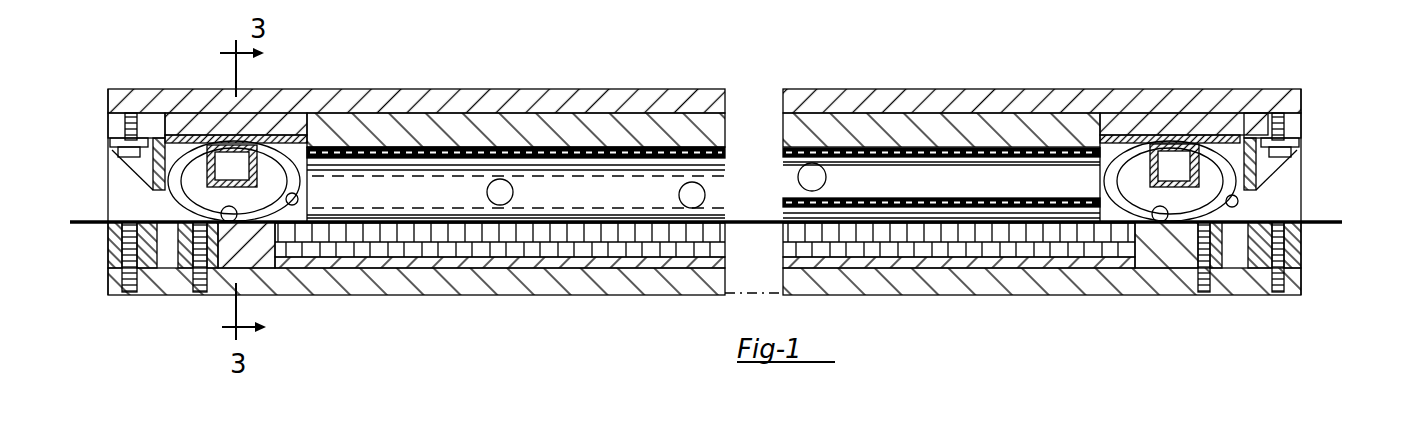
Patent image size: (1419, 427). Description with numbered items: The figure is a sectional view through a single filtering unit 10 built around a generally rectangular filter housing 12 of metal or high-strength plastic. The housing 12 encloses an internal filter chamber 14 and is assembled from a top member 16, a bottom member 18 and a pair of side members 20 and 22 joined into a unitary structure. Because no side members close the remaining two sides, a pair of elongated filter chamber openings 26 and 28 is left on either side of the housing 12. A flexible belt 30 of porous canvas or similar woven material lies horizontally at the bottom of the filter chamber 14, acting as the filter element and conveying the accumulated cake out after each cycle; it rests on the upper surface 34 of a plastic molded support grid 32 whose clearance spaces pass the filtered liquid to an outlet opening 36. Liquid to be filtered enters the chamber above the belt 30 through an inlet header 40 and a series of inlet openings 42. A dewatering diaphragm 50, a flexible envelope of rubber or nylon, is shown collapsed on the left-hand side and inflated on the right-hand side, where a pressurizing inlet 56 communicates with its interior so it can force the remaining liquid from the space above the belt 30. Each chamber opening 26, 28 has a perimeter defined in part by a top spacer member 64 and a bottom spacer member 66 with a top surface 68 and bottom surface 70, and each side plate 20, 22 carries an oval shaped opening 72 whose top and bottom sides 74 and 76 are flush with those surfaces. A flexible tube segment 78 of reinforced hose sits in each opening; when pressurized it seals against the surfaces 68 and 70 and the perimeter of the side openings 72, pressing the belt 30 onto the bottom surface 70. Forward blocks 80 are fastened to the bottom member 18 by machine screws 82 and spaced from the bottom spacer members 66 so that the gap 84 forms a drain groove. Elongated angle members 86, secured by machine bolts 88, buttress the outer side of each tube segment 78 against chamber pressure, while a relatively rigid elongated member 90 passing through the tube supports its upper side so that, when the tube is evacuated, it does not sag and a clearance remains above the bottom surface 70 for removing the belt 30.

The filtering unit 10 is at (1036, 52).
The filter housing 12 is at (563, 58).
The filter chamber 14 is at (367, 189).
The top member 16 is at (648, 62).
The bottom member 18 is at (608, 287).
The side member 20 is at (152, 216).
The side member 22 is at (1285, 212).
The filter chamber opening 26 is at (124, 181).
The filter chamber opening 28 is at (1302, 180).
The flexible belt 30 is at (88, 227).
The support grid 32 is at (452, 245).
The upper surface 34 is at (533, 215).
The outlet opening 36 is at (899, 242).
The inlet header 40 is at (610, 209).
The inlet openings 42 is at (487, 192).
The dewatering diaphragm 50 is at (463, 146).
The pressurizing inlet 56 is at (826, 178).
The top spacer member 64 is at (152, 117).
The bottom spacer member 66 is at (230, 267).
The top surface 68 is at (290, 135).
The bottom surface 70 is at (283, 213).
The oval shaped openings 72 is at (293, 202).
The top side 74 is at (220, 143).
The bottom side 76 is at (246, 245).
The flexible tube segment 78 is at (245, 135).
The forward blocks 80 is at (125, 253).
The machine screws 82 is at (147, 283).
The gap 84 is at (167, 265).
The angle members 86 is at (108, 162).
The machine bolts 88 is at (115, 155).
The elongated member 90 is at (187, 147).